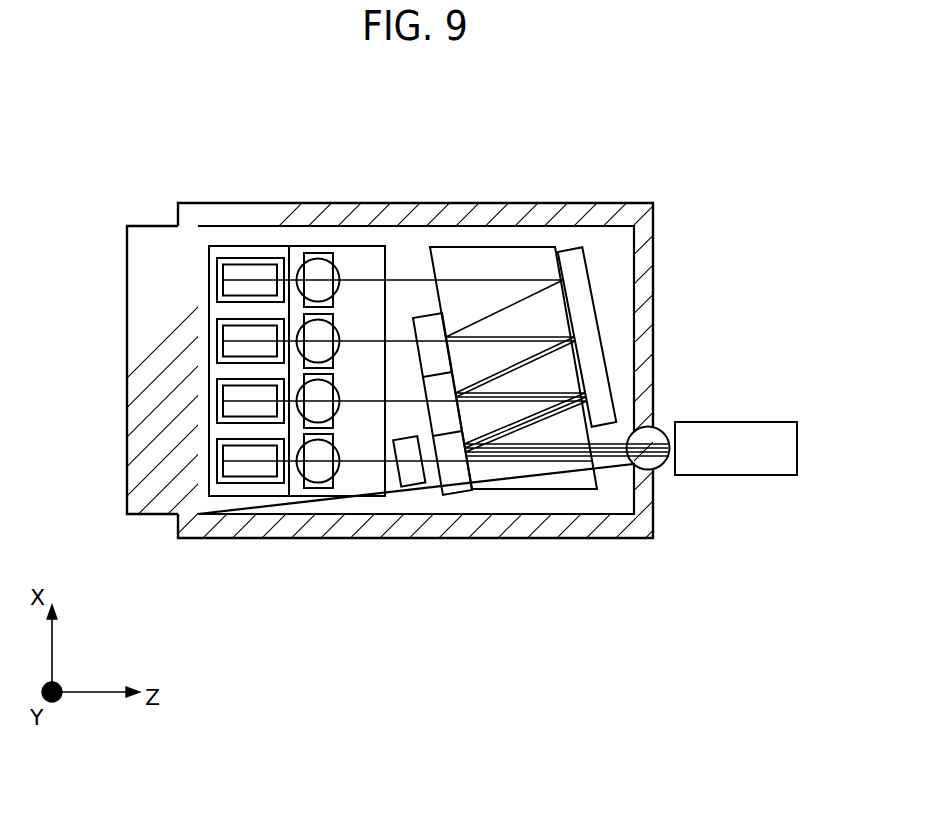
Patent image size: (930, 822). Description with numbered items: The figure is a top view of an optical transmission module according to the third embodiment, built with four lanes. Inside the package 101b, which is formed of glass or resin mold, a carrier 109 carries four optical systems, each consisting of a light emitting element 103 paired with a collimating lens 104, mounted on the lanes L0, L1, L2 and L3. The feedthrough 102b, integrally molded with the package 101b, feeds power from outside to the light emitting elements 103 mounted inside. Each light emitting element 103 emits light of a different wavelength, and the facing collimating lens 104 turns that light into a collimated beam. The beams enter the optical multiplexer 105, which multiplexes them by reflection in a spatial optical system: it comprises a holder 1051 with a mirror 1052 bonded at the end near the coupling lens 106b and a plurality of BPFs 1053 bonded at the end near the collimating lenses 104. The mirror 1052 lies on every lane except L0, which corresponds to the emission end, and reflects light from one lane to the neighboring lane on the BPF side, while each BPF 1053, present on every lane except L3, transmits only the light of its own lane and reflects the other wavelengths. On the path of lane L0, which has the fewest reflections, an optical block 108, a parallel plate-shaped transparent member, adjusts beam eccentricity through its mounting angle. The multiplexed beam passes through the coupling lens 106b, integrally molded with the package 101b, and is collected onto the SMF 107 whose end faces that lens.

The package 101b is at (567, 538).
The feedthrough 102b is at (127, 232).
The light emitting element 103 is at (258, 278).
The collimating lens 104 is at (318, 258).
The optical multiplexer 105 is at (499, 297).
The holder 1051 is at (490, 249).
The mirror 1052 is at (579, 289).
The BPF 1053 is at (428, 317).
The coupling lens 106b is at (657, 428).
The SMF 107 is at (777, 424).
The optical block 108 is at (409, 487).
The carrier 109 is at (222, 246).
The 0th lane L0 is at (336, 462).
The first lane L1 is at (333, 399).
The second lane L2 is at (327, 339).
The third lane L3 is at (321, 279).